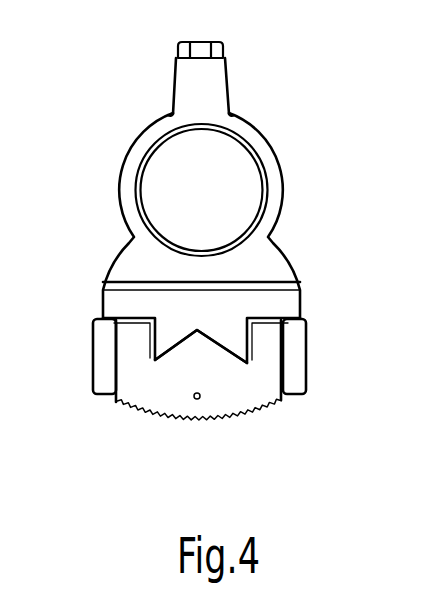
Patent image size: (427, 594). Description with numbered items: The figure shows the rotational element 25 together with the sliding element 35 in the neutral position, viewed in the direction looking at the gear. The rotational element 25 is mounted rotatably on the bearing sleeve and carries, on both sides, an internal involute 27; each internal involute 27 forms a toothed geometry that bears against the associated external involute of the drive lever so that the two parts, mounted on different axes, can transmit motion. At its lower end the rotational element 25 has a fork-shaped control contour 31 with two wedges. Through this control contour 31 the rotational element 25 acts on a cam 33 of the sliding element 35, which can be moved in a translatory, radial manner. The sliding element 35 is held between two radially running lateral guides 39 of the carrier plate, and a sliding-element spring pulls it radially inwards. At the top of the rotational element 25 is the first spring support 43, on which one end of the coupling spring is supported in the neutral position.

The rotational element 25 is at (262, 260).
The internal involute 27 is at (302, 300).
The fork-shaped control contour 31 is at (170, 329).
The cam 33 is at (183, 343).
The sliding element 35 is at (247, 390).
The lateral guide 39 is at (105, 378).
The first spring support 43 is at (205, 53).